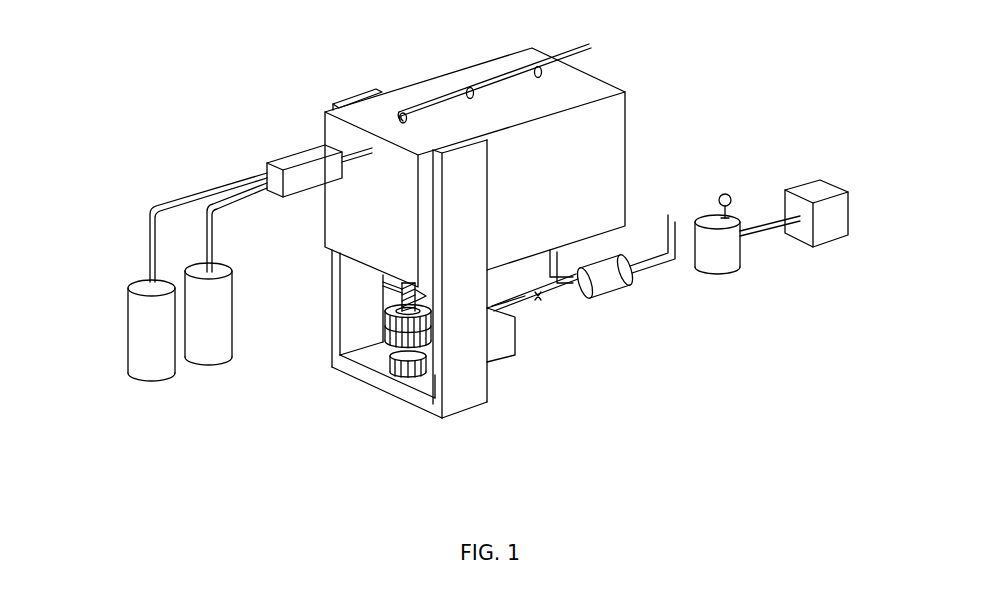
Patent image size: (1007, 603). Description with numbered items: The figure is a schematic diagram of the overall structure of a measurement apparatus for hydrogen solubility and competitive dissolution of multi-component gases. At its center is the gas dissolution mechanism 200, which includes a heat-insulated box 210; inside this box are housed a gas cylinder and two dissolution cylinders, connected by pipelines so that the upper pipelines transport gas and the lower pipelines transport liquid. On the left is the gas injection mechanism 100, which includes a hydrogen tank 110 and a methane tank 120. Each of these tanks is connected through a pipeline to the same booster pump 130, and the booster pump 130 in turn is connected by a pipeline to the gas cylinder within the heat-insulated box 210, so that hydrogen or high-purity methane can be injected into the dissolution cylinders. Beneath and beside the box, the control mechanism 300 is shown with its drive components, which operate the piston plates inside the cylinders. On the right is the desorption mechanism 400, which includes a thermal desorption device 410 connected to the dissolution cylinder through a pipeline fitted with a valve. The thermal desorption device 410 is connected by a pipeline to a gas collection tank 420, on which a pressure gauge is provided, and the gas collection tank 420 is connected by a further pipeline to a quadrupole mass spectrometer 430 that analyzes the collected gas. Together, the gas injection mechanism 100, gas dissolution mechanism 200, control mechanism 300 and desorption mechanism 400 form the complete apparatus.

The gas injection mechanism 100 is at (280, 138).
The hydrogen tank 110 is at (145, 328).
The methane tank 120 is at (207, 338).
The booster pump 130 is at (322, 177).
The gas dissolution mechanism 200 is at (460, 60).
The heat-insulated box 210 is at (577, 95).
The control mechanism 300 is at (500, 376).
The desorption mechanism 400 is at (702, 186).
The thermal desorption device 410 is at (598, 290).
The gas collection tank 420 is at (733, 253).
The mass spectrometer 430 is at (830, 227).